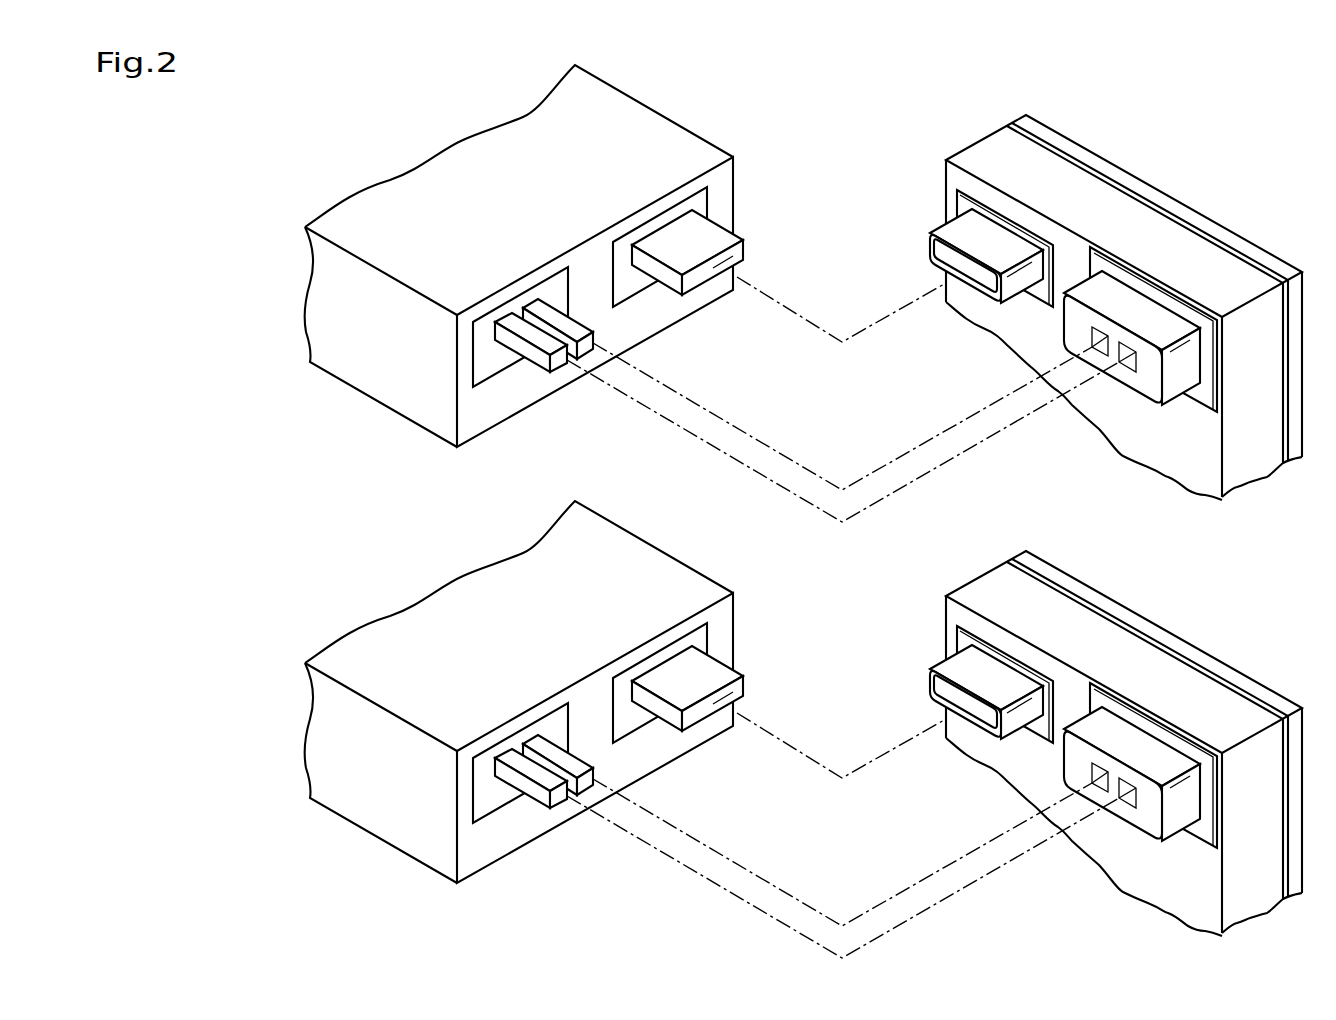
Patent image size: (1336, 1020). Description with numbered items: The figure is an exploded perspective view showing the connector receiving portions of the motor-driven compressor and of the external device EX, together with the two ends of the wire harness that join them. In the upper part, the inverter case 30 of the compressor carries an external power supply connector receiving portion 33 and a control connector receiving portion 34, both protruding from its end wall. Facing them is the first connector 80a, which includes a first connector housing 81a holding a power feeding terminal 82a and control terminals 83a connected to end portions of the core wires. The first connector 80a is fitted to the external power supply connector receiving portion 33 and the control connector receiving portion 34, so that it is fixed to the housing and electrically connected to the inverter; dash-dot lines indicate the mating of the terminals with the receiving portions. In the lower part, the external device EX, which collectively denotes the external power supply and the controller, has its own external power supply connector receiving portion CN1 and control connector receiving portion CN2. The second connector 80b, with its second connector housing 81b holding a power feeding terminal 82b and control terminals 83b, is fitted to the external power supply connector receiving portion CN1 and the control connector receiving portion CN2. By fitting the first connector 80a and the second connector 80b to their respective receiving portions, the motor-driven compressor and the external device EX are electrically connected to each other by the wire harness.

The inverter case 30 is at (975, 143).
The external power supply connector receiving portion 33 is at (1185, 359).
The control connector receiving portion 34 is at (928, 241).
The first connector 80a is at (423, 128).
The first connector housing 81a is at (712, 143).
The terminal 82a is at (527, 374).
The terminals 83a is at (703, 287).
The second connector 80b is at (519, 692).
The second connector housing 81b is at (608, 705).
The terminal 82b is at (544, 816).
The terminals 83b is at (687, 721).
The external device EX is at (1118, 733).
The external power supply connector receiving portion CN1 is at (1172, 779).
The control connector receiving portion CN2 is at (948, 692).